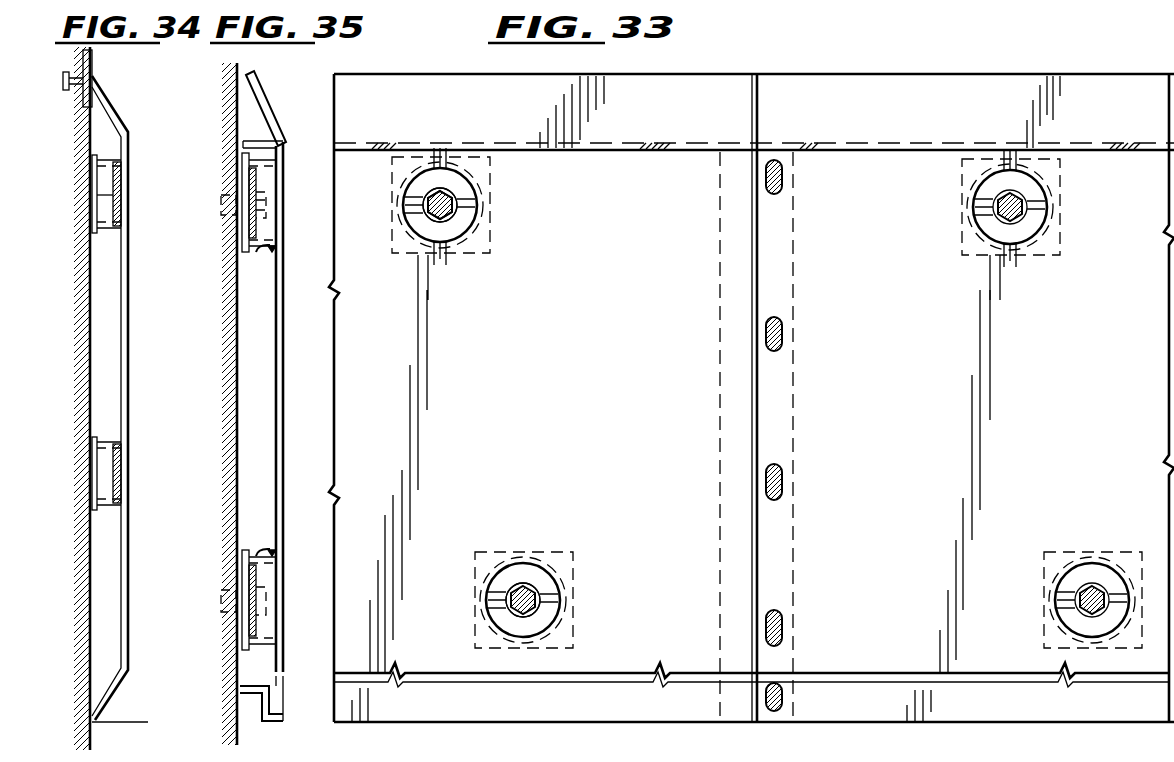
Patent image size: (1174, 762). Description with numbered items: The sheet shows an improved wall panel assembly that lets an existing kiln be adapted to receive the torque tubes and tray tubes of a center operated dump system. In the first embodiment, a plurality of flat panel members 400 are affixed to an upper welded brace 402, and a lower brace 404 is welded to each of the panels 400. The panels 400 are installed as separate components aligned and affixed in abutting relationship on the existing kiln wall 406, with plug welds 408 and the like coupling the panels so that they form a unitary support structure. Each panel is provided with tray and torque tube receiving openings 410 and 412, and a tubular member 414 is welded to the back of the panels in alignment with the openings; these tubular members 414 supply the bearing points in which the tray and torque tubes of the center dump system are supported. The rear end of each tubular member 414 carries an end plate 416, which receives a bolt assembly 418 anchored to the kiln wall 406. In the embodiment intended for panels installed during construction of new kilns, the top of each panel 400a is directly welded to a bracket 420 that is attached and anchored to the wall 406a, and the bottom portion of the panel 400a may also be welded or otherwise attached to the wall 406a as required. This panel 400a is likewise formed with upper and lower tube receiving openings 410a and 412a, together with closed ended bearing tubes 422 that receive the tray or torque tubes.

In FIG. 35, the flat panel member 400 is at (290, 198).
In FIG. 33, the flat panel member 400 is at (682, 190).
In FIG. 34, the panel 400a is at (128, 138).
In FIG. 35, the upper welded brace 402 is at (258, 100).
In FIG. 33, the upper welded brace 402 is at (433, 95).
In FIG. 35, the lower brace 404 is at (262, 713).
In FIG. 35, the kiln wall 406 is at (233, 265).
In FIG. 34, the wall 406a is at (88, 340).
In FIG. 33, the plug welds 408 is at (785, 332).
In FIG. 35, the tray tube receiving opening 410 is at (277, 240).
In FIG. 33, the tray tube receiving opening 410 is at (475, 226).
In FIG. 34, the upper tube receiving opening 410a is at (127, 180).
In FIG. 35, the torque tube receiving opening 412 is at (277, 636).
In FIG. 33, the torque tube receiving opening 412 is at (565, 597).
In FIG. 34, the lower tube receiving opening 412a is at (120, 470).
In FIG. 35, the tubular member 414 is at (258, 253).
In FIG. 35, the end plate 416 is at (250, 180).
In FIG. 33, the end plate 416 is at (445, 232).
In FIG. 35, the bolt assembly 418 is at (243, 212).
In FIG. 33, the bolt assembly 418 is at (470, 203).
In FIG. 34, the bracket 420 is at (90, 95).
In FIG. 34, the closed ended bearing tube 422 is at (105, 200).